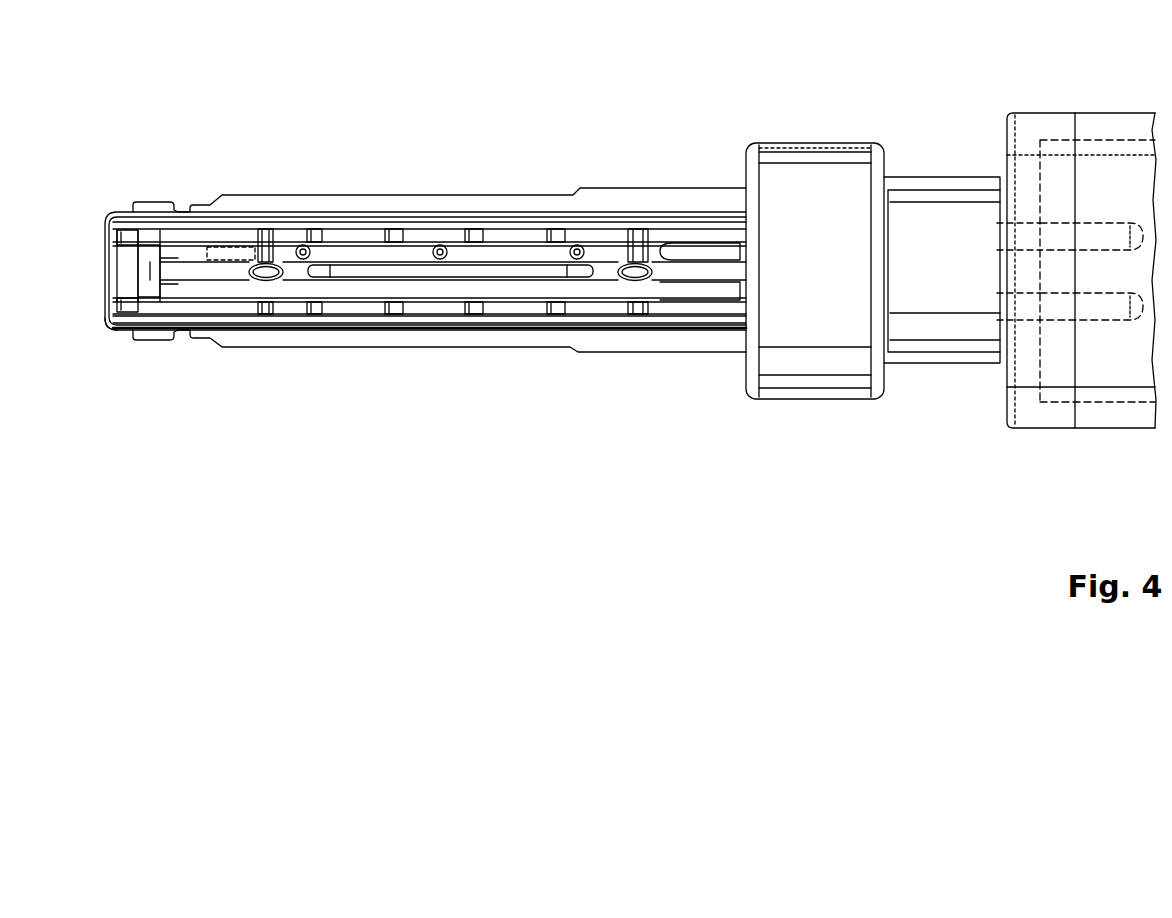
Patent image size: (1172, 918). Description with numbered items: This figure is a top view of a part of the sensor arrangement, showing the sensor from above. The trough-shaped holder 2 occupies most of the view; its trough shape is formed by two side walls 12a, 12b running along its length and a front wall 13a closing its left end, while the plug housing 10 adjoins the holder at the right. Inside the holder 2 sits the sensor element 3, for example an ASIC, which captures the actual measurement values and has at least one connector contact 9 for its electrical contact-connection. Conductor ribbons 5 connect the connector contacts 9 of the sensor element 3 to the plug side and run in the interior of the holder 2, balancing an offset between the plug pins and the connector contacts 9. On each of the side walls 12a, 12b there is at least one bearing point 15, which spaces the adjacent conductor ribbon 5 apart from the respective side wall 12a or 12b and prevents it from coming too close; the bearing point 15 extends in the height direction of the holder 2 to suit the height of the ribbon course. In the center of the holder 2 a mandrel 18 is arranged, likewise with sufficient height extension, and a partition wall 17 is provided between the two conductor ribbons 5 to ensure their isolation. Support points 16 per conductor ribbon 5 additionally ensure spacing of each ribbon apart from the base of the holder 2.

The holder 2 is at (316, 365).
The sensor element 3 is at (133, 238).
The conductor ribbon 5 is at (508, 248).
The connector contact 9 is at (175, 250).
The plug housing 10 is at (1095, 110).
The side wall 12a is at (411, 222).
The side wall 12b is at (411, 322).
The front wall 13a is at (112, 318).
The bearing point 15 is at (266, 233).
The support point 16 is at (304, 246).
The partition wall 17 is at (350, 268).
The mandrel 18 is at (258, 274).